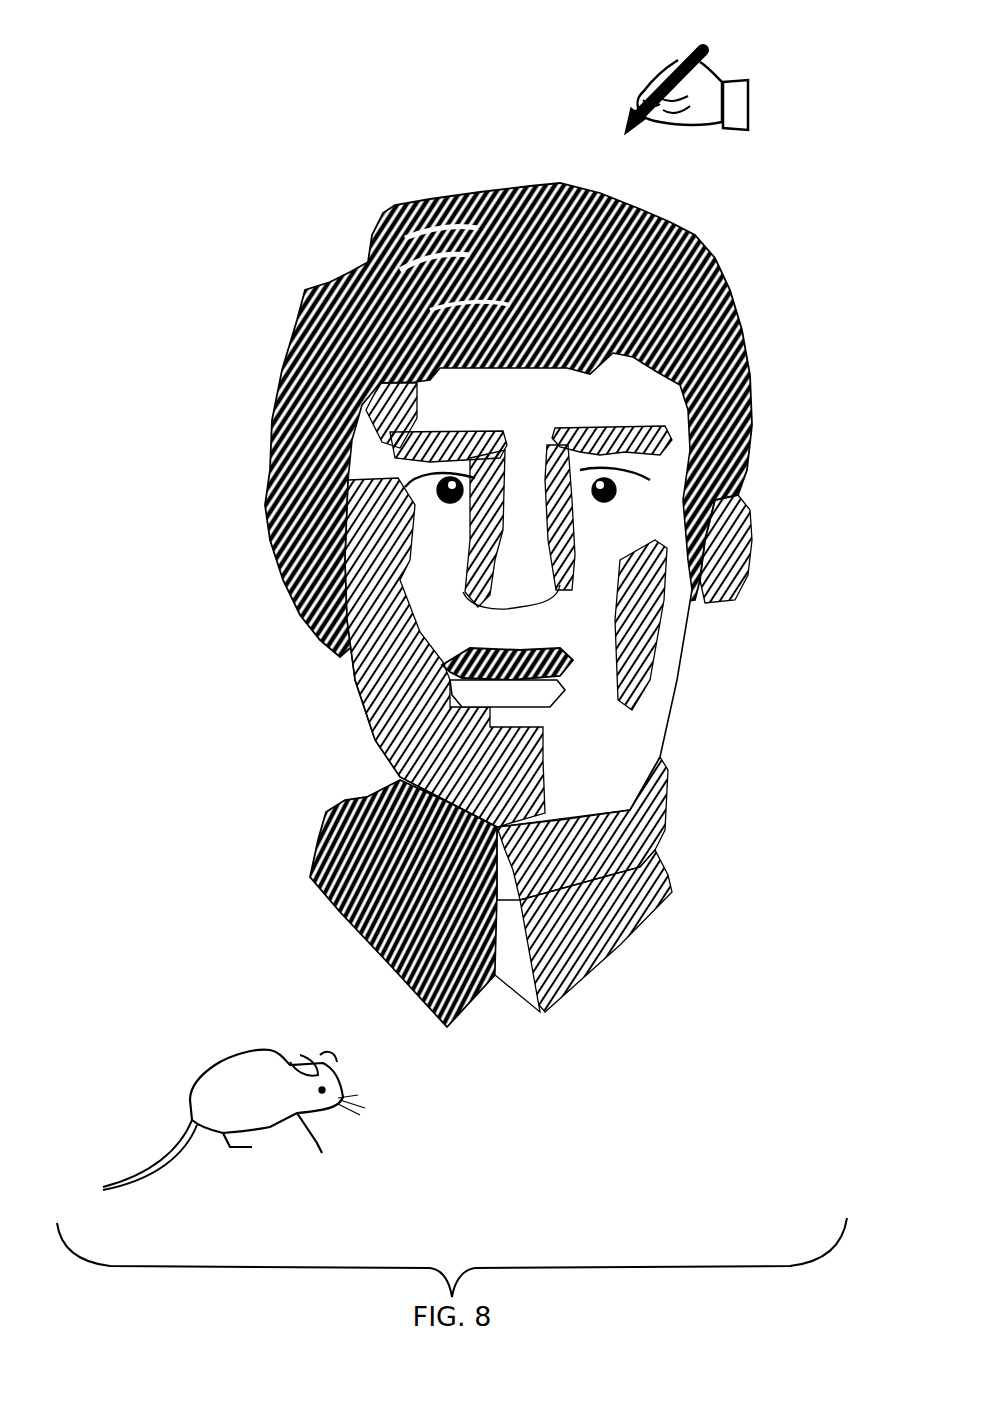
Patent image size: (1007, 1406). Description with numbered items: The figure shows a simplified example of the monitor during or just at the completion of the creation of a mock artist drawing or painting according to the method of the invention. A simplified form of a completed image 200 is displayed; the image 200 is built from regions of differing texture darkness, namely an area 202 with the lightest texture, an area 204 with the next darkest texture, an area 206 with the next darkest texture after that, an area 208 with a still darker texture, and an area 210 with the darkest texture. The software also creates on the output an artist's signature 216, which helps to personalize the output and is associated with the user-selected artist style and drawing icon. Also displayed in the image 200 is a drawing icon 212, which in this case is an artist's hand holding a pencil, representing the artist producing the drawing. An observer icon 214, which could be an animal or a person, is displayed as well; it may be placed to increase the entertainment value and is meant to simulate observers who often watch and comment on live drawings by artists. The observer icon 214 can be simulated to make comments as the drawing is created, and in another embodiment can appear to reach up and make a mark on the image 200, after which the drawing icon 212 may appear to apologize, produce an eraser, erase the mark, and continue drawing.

The completed image 200 is at (485, 605).
The area with the lightest texture 202 is at (667, 706).
The area with the next darkest texture 204 is at (643, 826).
The area with the next darkest texture 206 is at (365, 683).
The area with the next darkest texture 208 is at (483, 553).
The area with the darkest texture 210 is at (690, 232).
The drawing icon 212 is at (722, 75).
The observer icon 214 is at (243, 1053).
The signature 216 is at (740, 1015).